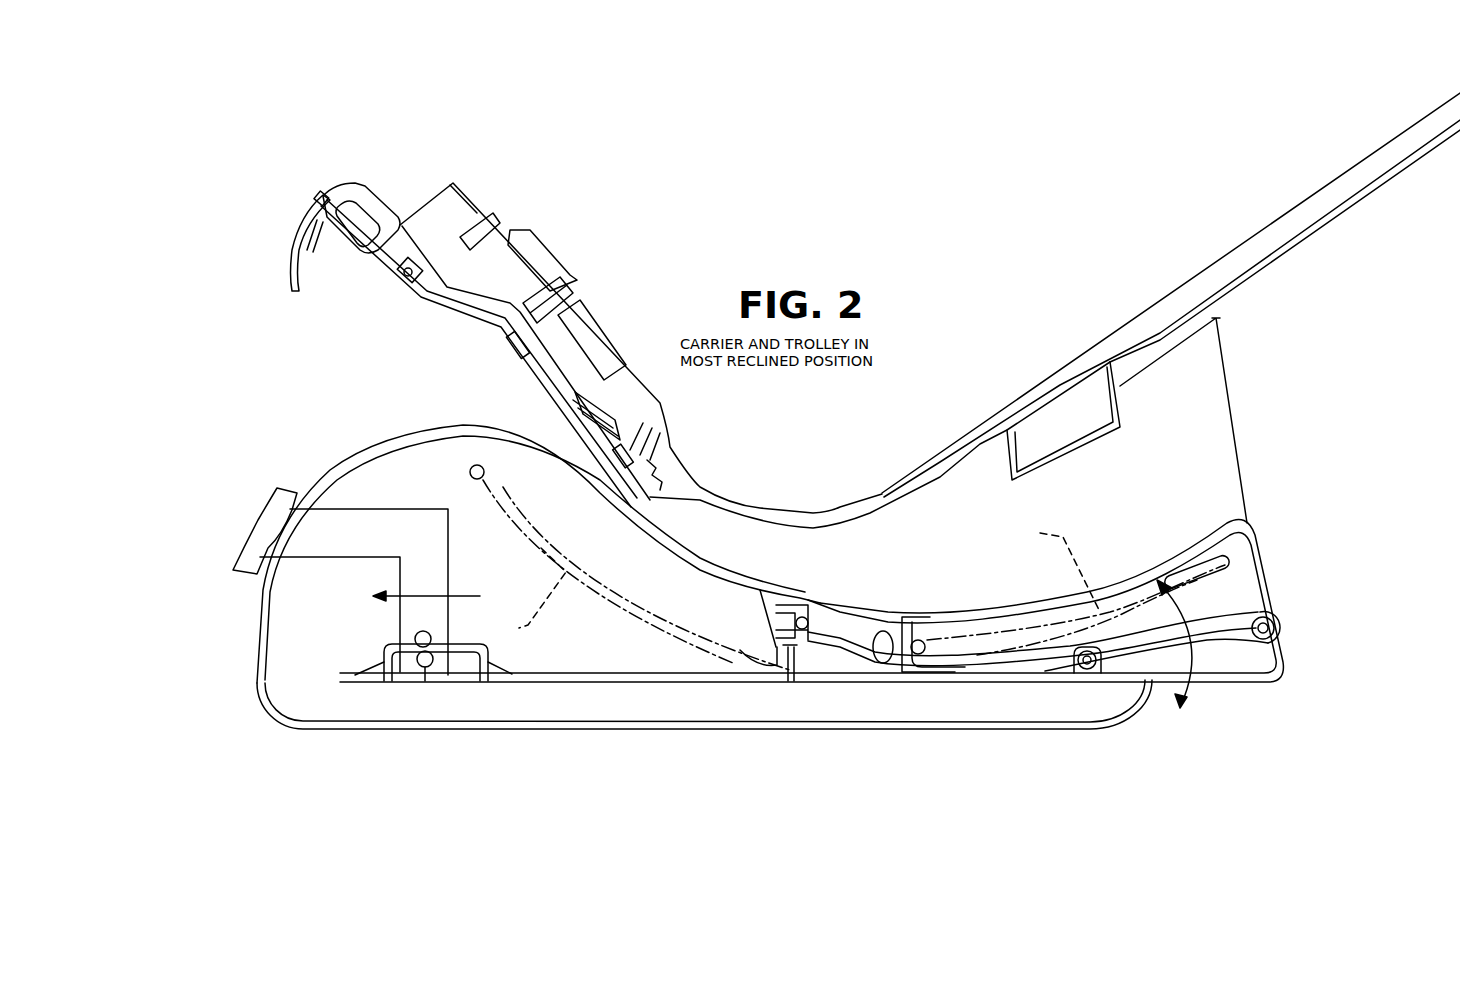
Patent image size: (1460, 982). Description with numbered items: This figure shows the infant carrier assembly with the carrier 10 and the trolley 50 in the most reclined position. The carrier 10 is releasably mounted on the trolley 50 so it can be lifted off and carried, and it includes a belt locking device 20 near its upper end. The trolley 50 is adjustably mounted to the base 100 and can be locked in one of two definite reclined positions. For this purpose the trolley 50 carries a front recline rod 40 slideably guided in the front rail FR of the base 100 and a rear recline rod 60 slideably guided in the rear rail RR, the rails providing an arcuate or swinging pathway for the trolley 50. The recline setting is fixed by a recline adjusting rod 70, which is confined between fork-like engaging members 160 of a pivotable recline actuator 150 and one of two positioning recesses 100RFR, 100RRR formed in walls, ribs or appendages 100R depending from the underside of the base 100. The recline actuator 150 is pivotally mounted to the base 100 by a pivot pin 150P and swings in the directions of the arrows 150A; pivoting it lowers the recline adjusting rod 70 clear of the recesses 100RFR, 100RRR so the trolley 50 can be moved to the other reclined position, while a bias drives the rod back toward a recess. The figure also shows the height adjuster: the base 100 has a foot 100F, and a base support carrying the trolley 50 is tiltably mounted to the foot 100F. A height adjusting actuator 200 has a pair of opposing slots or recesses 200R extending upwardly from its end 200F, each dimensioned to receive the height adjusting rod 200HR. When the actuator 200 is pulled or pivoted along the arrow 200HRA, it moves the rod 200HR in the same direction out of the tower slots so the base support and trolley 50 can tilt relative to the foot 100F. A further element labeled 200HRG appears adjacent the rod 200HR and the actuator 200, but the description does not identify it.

The carrier 10 is at (1167, 290).
The belt locking device 20 is at (425, 288).
The front recline rod 40 is at (470, 470).
The trolley 50 is at (1130, 503).
The rear recline rod 60 is at (921, 650).
The recline adjusting rod 70 is at (803, 628).
The base 100 is at (1268, 575).
The foot 100F is at (618, 733).
The walls or ribs or appendages 100R is at (757, 600).
The positioning recess 100RFR is at (795, 613).
The positioning recess 100RRR is at (885, 632).
The recline actuator 150 is at (1200, 643).
The arrows 150A is at (1133, 630).
The pivot pin 150P is at (1089, 662).
The fork-like engaging members 160 is at (787, 652).
The height adjusting actuator 200 is at (362, 549).
The end of the actuator 200F is at (418, 662).
The height adjusting rod 200HR is at (430, 664).
The arrow 200HRA is at (427, 595).
The front support hinge roller guide 200HRG is at (387, 648).
The opposing slots or recesses 200R is at (425, 636).